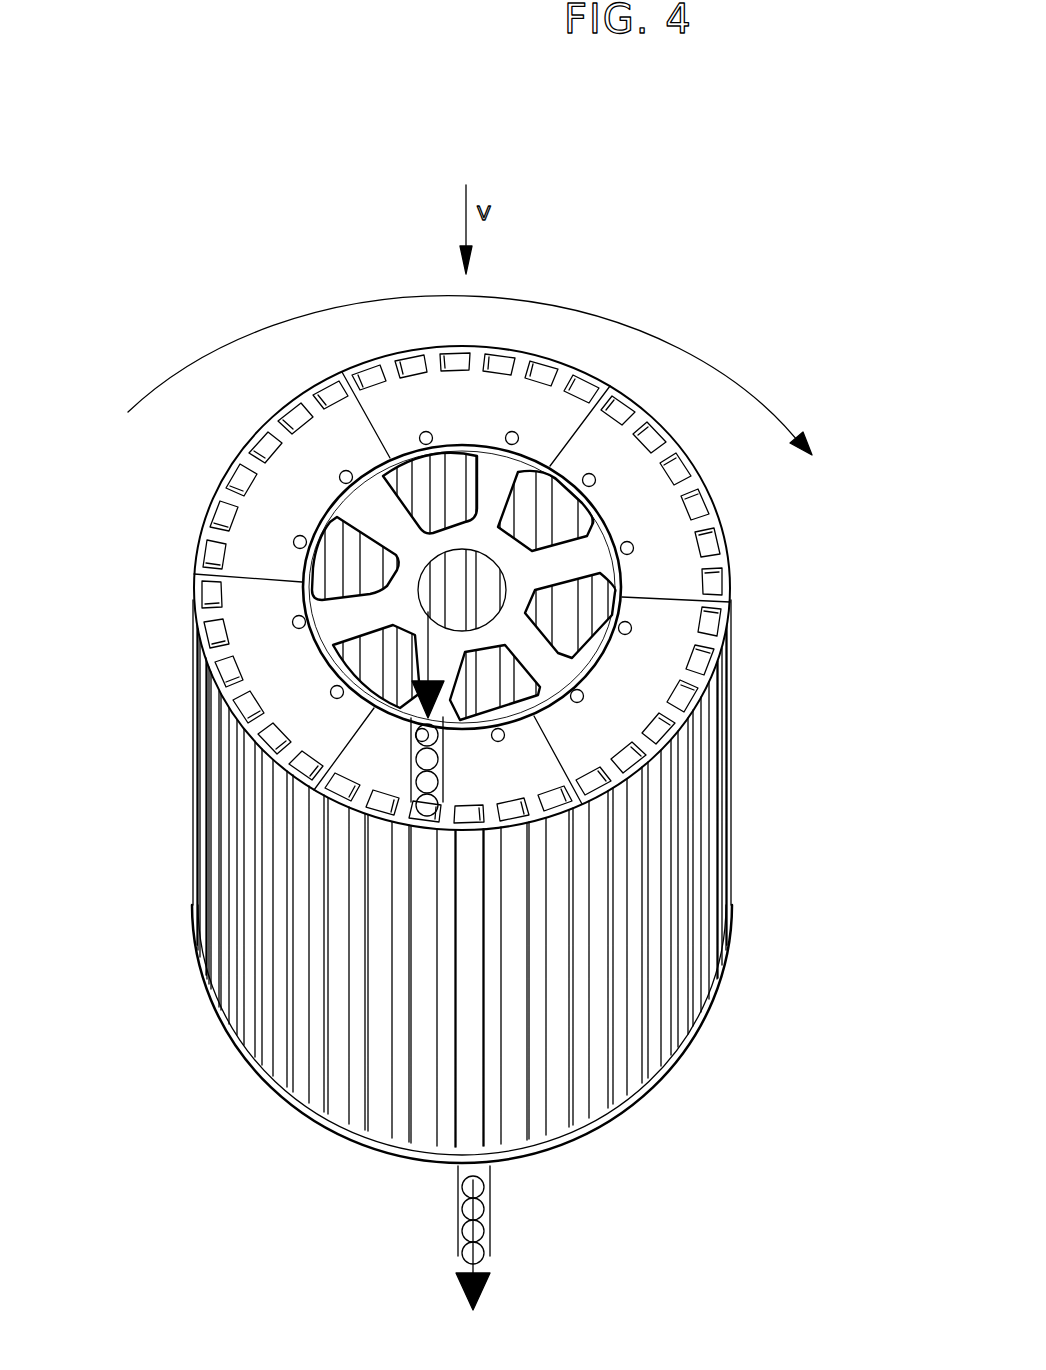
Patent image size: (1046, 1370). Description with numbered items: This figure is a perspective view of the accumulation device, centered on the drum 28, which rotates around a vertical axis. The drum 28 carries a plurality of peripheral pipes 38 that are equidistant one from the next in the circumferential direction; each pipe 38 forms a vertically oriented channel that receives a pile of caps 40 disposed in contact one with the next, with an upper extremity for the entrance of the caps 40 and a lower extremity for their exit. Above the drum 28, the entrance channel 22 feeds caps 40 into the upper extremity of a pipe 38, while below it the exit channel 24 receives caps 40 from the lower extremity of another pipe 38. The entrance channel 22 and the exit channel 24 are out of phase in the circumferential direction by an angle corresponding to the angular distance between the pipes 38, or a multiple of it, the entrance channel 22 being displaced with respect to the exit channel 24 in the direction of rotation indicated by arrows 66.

The entrance channel 22 is at (443, 768).
The exit channel 24 is at (492, 1210).
The drum 28 is at (776, 609).
The peripheral pipes 38 is at (200, 847).
The caps 40 is at (414, 797).
The arrows indicating direction of rotation 66 is at (645, 318).